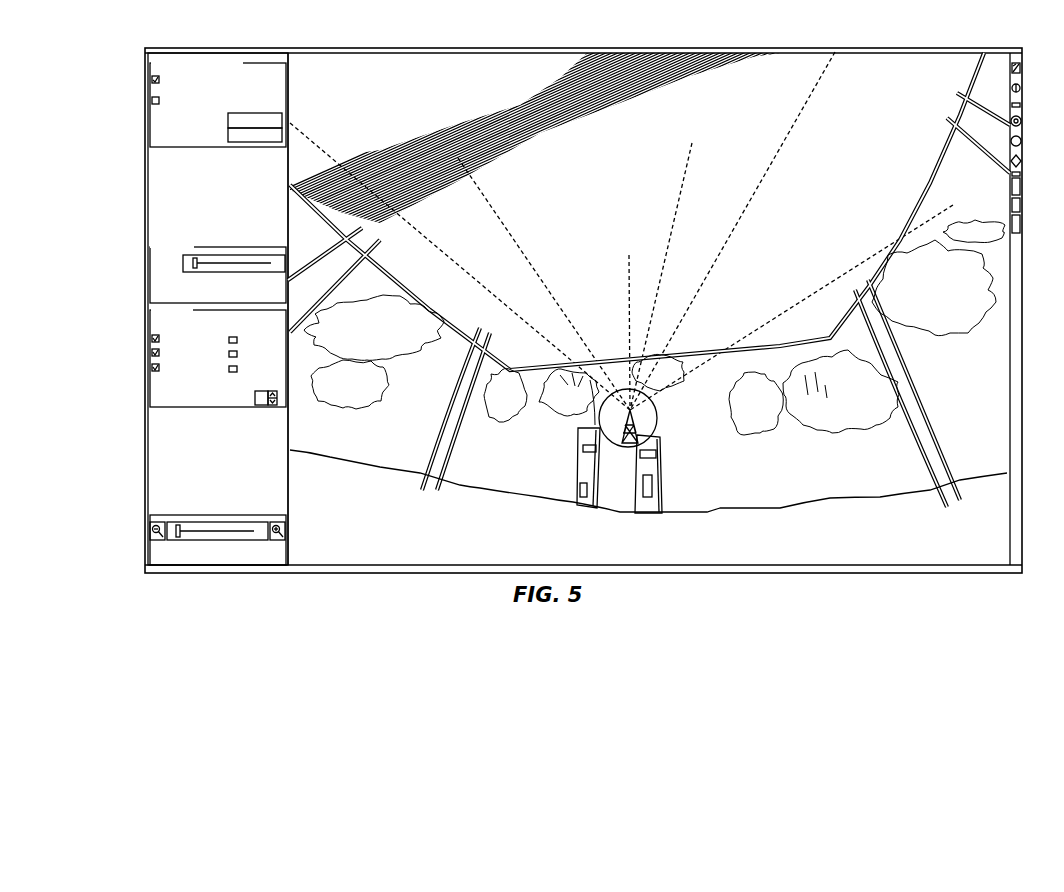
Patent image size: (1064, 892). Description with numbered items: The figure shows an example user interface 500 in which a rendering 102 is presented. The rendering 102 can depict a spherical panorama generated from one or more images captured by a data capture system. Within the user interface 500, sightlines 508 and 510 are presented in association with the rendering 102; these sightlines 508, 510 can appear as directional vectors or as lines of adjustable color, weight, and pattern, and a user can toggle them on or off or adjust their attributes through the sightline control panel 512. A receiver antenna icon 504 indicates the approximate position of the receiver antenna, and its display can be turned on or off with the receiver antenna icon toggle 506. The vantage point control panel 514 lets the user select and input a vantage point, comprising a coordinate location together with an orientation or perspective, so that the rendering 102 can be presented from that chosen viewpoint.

The user interface 500 is at (805, 574).
The receiver antenna icon toggle 506 is at (152, 82).
The vantage point control panel 514 is at (203, 56).
The sightline control panel 512 is at (238, 351).
The sightline 508 is at (512, 247).
The sightline 510 is at (782, 305).
The rendering 102 is at (473, 450).
The receiver antenna icon 504 is at (627, 444).